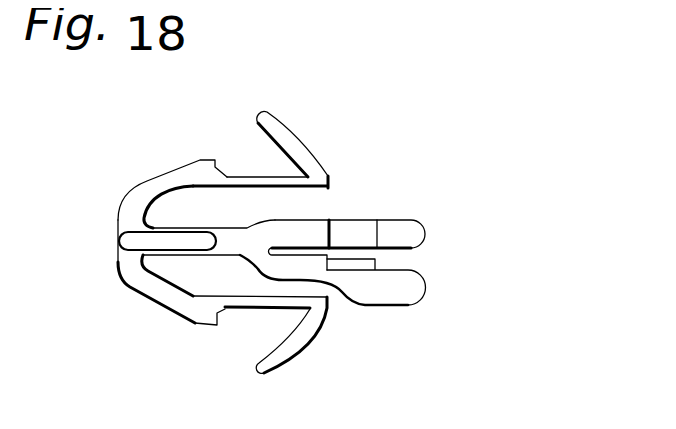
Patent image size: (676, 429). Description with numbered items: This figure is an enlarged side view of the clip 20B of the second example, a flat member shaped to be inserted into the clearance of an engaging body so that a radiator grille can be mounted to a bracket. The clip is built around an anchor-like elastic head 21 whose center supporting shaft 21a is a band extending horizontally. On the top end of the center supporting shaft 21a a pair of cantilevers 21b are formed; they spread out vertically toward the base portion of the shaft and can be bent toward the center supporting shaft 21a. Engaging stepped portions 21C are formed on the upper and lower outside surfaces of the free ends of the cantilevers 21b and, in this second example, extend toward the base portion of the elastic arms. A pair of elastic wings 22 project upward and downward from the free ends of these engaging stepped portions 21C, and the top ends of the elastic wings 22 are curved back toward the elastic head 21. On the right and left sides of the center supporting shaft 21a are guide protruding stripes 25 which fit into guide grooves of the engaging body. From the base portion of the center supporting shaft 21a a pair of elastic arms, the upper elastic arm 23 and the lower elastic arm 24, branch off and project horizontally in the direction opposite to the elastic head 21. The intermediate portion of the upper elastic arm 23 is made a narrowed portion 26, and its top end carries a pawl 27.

The clip 20B is at (130, 286).
The elastic head 21 is at (118, 270).
The center supporting shaft 21a is at (221, 250).
The cantilevers 21b is at (172, 187).
The engaging stepped portions 21C is at (237, 180).
The elastic wings 22 is at (287, 136).
The upper elastic arm 23 is at (426, 168).
The lower elastic arm 24 is at (404, 297).
The guide protruding stripes 25 is at (134, 238).
The narrowed portion 26 is at (355, 233).
The pawl 27 is at (392, 235).